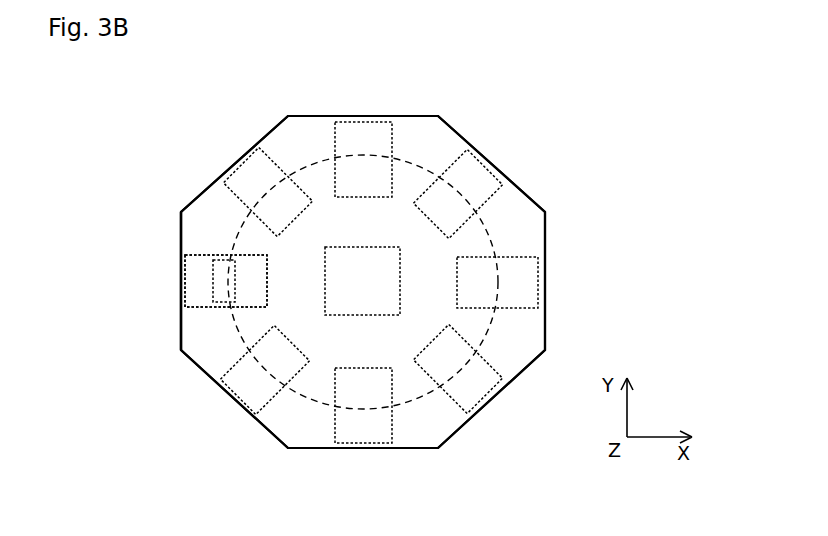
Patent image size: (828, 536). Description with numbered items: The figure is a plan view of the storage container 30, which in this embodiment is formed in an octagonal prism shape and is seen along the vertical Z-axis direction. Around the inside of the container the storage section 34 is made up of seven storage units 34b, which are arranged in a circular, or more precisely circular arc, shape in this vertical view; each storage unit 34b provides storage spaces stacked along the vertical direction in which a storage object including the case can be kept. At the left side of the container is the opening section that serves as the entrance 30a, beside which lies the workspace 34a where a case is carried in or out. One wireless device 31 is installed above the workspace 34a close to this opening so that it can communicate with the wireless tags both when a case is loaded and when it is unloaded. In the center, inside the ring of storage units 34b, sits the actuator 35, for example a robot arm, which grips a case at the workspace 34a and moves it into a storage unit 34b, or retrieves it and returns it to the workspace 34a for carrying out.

The storage container 30 is at (367, 116).
The entrance 30a is at (181, 277).
The wireless device 31 is at (213, 262).
The storage section 34 is at (413, 137).
The workspace 34a is at (210, 255).
The storage units 34b is at (330, 120).
The actuator 35 is at (337, 246).